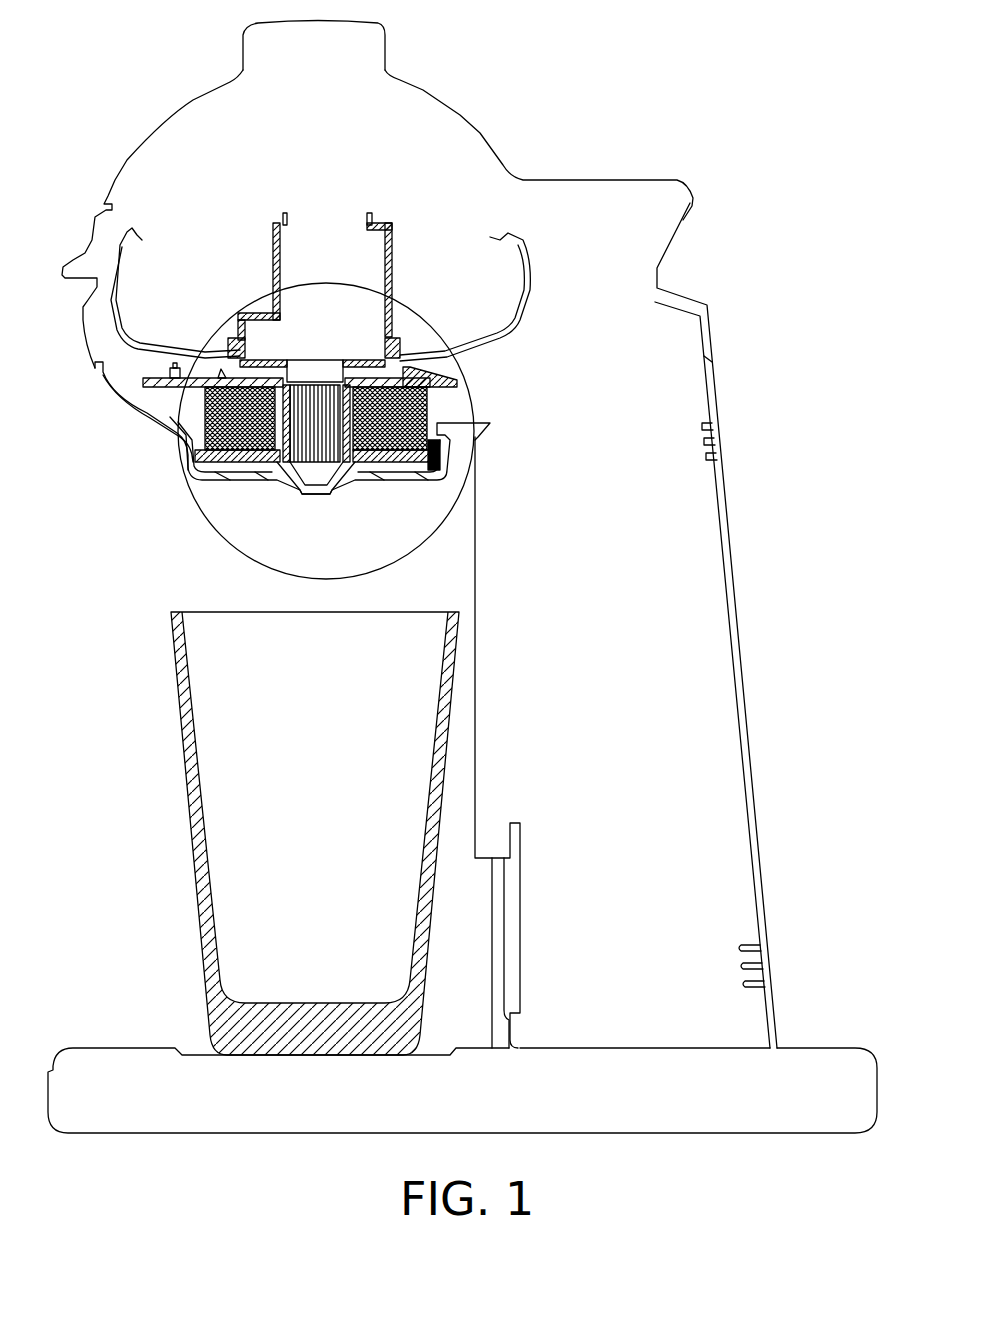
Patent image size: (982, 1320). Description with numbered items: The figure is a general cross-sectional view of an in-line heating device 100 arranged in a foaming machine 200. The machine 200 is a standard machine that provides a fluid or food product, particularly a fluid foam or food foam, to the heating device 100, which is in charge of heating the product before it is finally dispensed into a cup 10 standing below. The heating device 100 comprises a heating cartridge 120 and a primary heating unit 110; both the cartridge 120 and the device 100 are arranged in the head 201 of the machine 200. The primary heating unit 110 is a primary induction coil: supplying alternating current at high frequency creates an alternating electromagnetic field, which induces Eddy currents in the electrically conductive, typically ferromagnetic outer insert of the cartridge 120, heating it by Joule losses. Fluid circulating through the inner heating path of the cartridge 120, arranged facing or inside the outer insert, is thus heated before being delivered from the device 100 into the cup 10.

The cup 10 is at (225, 740).
The heating device 100 is at (193, 500).
The primary heating unit 110 is at (427, 413).
The heating cartridge 120 is at (297, 487).
The foaming machine 200 is at (685, 222).
The head 201 is at (178, 153).